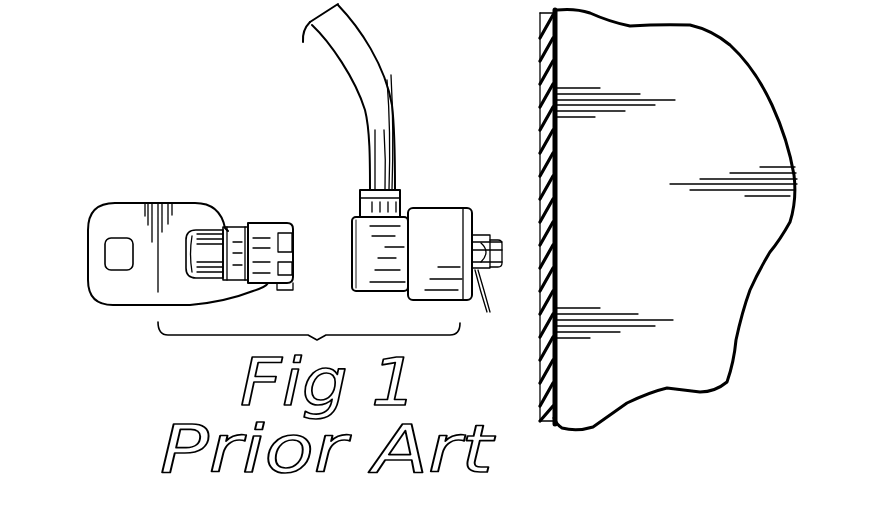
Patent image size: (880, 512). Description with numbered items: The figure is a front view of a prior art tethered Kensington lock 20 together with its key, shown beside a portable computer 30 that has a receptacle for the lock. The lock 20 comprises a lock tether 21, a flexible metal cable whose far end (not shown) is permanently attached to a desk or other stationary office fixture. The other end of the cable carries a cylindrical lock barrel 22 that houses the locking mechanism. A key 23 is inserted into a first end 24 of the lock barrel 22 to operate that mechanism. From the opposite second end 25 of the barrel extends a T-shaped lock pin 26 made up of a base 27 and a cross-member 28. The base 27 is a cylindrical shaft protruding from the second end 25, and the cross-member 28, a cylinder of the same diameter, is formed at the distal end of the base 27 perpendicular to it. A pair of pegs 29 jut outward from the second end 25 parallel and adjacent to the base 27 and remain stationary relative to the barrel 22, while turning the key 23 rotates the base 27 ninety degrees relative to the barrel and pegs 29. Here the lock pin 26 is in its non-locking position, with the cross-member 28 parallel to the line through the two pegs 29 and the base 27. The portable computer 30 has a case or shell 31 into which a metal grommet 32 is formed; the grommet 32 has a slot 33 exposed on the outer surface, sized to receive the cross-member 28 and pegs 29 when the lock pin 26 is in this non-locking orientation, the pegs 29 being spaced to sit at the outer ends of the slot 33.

The Kensington lock 20 is at (337, 178).
The lock tether 21 is at (355, 40).
The lock barrel 22 is at (365, 238).
The key 23 is at (112, 213).
The first end 24 is at (333, 297).
The second end 25 is at (492, 175).
The T-shaped lock pin 26 is at (498, 275).
The base 27 is at (473, 248).
The cross-member 28 is at (502, 242).
The pegs 29 is at (496, 308).
The portable computer 30 is at (717, 109).
The case or shell 31 is at (545, 50).
The metal grommet 32 is at (556, 230).
The slot 33 is at (548, 256).